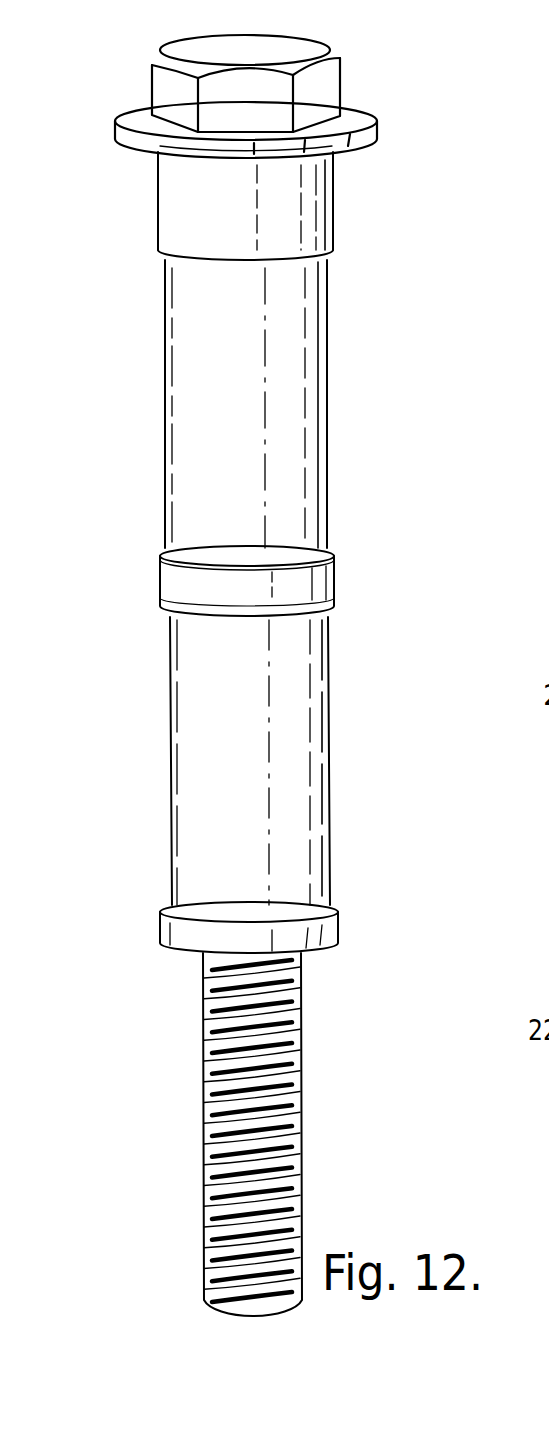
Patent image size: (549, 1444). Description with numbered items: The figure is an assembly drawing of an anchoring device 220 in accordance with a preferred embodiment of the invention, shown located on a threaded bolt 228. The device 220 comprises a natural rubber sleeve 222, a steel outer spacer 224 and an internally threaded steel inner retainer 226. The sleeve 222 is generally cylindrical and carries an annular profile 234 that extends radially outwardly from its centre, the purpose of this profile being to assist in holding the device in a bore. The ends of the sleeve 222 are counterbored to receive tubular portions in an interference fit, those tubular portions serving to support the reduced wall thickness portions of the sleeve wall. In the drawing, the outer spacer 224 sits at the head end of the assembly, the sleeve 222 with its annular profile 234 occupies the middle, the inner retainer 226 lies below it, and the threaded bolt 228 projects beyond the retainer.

The device 220 is at (250, 675).
The natural rubber sleeve 222 is at (293, 468).
The steel outer spacer 224 is at (307, 213).
The internally threaded steel inner retainer 226 is at (338, 926).
The threaded bolt 228 is at (270, 1118).
The annular profile 234 is at (318, 580).